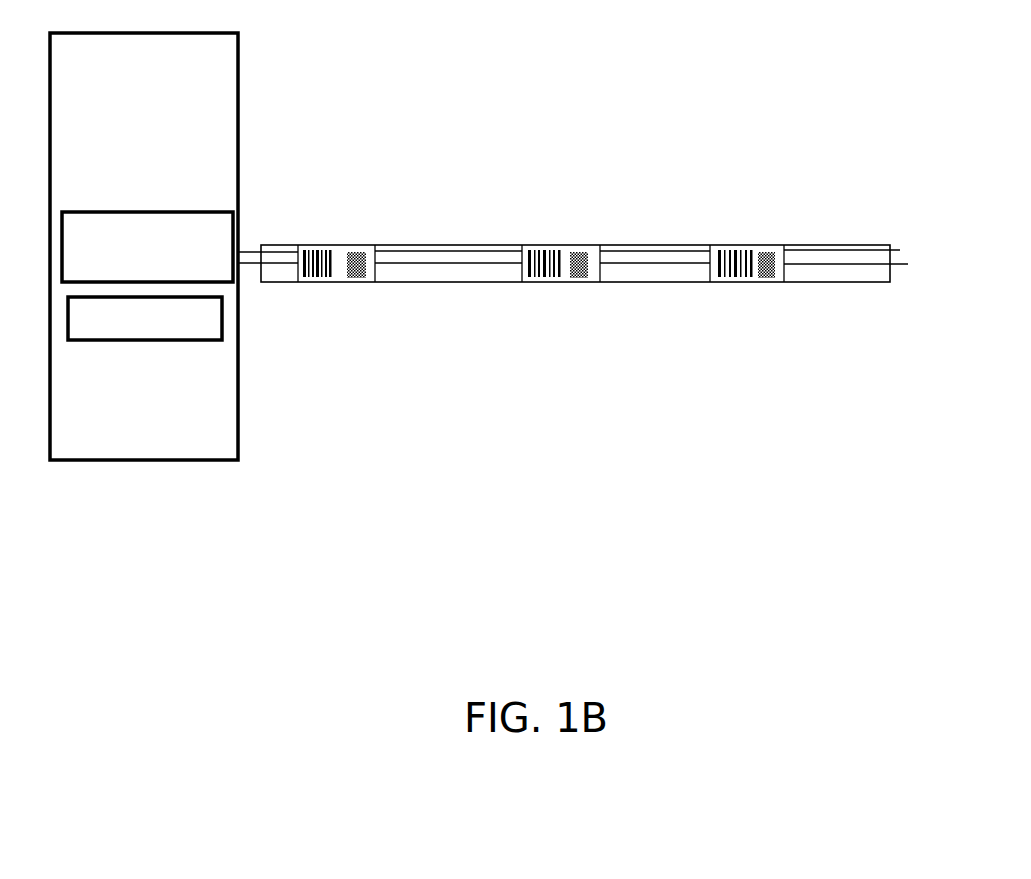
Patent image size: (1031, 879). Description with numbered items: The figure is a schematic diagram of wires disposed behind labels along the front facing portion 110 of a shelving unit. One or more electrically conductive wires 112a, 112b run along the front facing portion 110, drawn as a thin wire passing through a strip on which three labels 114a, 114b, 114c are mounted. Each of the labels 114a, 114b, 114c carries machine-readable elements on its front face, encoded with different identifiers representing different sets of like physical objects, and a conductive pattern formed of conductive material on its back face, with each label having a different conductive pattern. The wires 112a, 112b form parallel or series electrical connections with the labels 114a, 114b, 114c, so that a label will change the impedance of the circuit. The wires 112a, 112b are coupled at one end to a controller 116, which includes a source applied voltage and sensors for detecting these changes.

The controller 116 is at (144, 246).
The front facing portion 110 is at (852, 245).
The wire 112a is at (685, 265).
The wire 112b is at (427, 245).
The label 114a is at (327, 282).
The label 114b is at (567, 245).
The label 114c is at (770, 268).